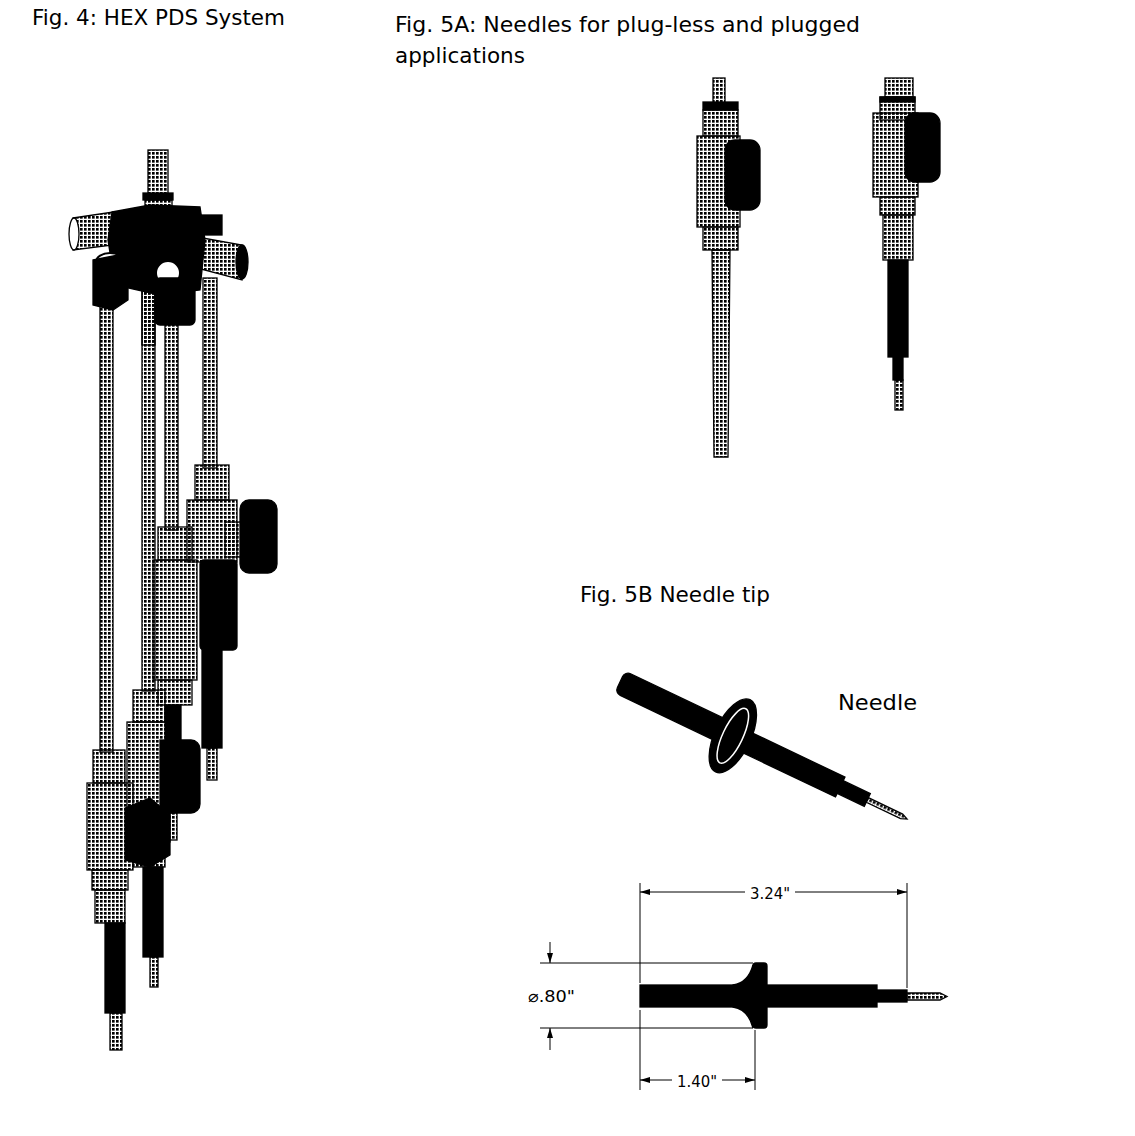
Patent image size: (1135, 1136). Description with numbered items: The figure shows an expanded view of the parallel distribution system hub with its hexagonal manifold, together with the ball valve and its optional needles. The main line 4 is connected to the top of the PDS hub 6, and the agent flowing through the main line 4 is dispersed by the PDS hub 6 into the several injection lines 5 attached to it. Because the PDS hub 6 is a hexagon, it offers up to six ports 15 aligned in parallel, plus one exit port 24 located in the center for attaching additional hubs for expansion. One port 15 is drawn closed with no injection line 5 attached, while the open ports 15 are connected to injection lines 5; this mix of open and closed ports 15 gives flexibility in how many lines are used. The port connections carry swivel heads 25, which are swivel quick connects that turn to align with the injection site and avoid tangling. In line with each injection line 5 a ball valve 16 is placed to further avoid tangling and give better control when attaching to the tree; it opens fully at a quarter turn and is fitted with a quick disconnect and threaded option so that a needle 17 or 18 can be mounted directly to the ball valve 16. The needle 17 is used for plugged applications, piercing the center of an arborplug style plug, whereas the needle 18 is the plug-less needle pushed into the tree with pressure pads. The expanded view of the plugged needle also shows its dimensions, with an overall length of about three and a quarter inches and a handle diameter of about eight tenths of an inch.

In FIG. 4, the main line 4 is at (158, 145).
In FIG. 4, the PDS hub 6 is at (300, 145).
In FIG. 4, the port 15 is at (84, 276).
In FIG. 4, the exit port 24 is at (156, 327).
In FIG. 4, the swivel head 25 is at (187, 319).
In FIG. 4, the injection line 5 is at (232, 426).
In FIG. 4, the ball valve 16 is at (245, 607).
In FIG. 5A, the ball valve 16 is at (920, 133).
In FIG. 4, the needle 17 is at (238, 694).
In FIG. 5A, the needle 17 is at (875, 350).
In FIG. 5A, the needle 18 is at (709, 346).